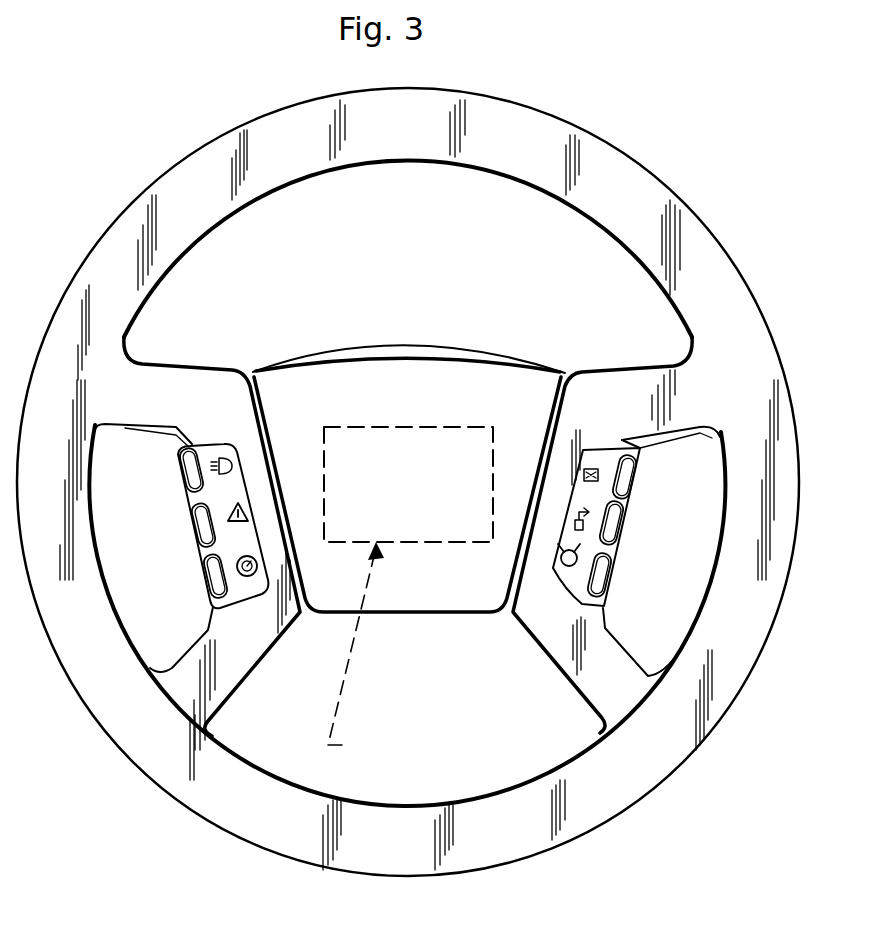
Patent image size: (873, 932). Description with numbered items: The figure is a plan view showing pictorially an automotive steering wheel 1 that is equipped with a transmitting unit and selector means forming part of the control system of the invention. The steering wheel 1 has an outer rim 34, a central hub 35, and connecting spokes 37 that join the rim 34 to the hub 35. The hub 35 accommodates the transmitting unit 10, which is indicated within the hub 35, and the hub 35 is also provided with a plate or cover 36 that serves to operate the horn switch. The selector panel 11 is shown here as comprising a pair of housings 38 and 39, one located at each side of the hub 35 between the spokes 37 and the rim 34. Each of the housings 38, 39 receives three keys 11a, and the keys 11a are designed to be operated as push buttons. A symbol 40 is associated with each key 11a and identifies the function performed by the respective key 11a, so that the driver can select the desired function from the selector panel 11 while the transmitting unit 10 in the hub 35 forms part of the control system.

The steering wheel 1 is at (758, 298).
The transmitting unit 10 is at (418, 545).
The selector panel 11 is at (200, 549).
The key 11a is at (184, 465).
The rim 34 is at (662, 218).
The hub 35 is at (294, 356).
The plate or cover 36 is at (421, 392).
The connecting spokes 37 is at (631, 398).
The housing 38 is at (214, 449).
The housing 39 is at (595, 457).
The symbol 40 is at (252, 577).